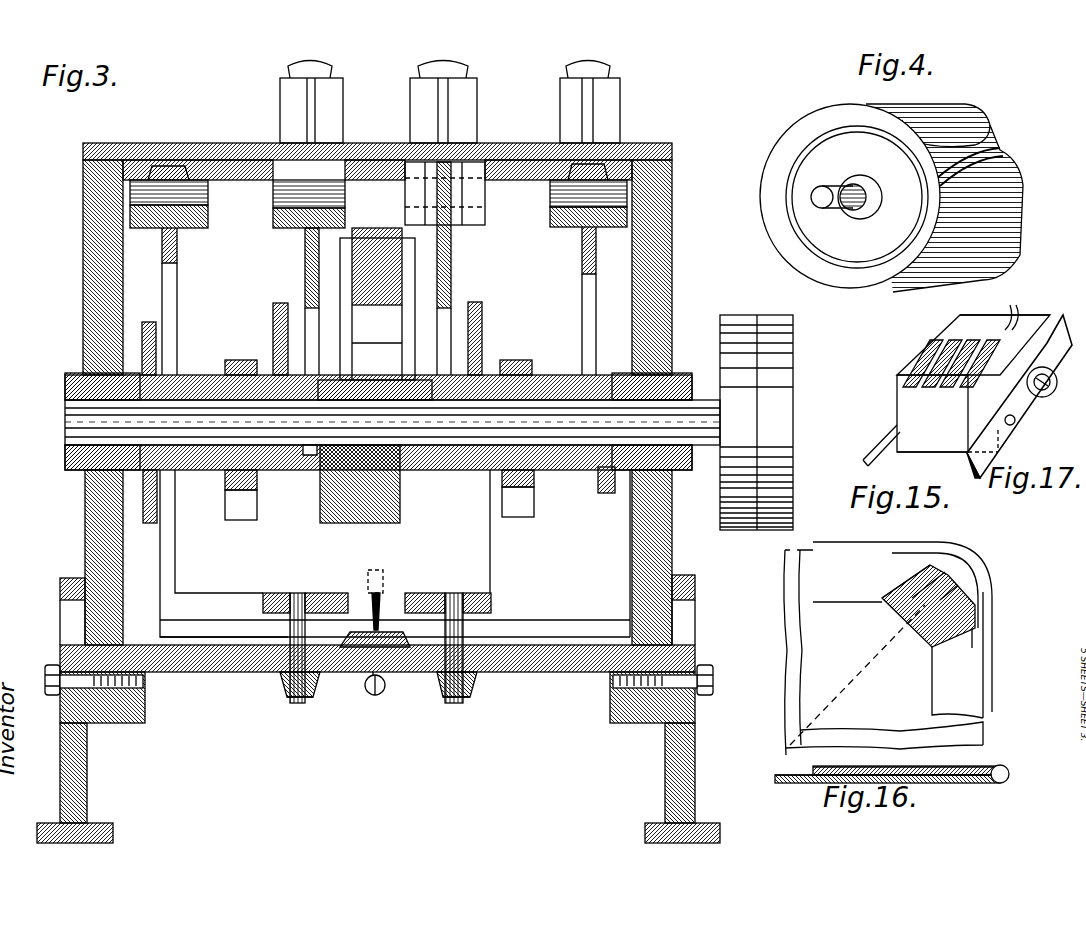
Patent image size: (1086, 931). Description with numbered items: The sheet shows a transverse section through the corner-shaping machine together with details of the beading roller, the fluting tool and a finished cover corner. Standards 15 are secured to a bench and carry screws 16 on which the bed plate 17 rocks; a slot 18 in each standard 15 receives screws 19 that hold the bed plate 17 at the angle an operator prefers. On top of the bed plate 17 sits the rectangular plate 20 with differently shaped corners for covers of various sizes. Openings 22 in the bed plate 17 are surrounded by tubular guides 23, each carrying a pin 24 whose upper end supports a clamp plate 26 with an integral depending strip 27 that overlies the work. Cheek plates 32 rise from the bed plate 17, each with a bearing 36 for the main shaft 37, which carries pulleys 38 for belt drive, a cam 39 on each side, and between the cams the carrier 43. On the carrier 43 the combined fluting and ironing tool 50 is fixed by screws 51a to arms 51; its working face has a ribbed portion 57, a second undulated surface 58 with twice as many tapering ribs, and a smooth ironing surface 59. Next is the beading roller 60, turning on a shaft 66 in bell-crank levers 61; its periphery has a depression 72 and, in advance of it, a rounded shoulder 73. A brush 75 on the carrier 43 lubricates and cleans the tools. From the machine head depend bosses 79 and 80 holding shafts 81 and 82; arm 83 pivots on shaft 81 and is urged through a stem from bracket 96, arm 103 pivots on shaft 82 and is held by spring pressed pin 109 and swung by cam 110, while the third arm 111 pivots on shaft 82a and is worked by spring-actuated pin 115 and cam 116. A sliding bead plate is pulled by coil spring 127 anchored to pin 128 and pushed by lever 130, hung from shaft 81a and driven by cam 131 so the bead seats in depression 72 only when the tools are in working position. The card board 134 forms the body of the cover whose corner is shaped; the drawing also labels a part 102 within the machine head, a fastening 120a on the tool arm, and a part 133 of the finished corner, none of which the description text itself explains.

In FIG. 3, the standards 15 is at (88, 783).
In FIG. 16, the screw 16 is at (958, 578).
In FIG. 3, the bed plate 17 is at (588, 673).
In FIG. 3, the slot 18 is at (62, 608).
In FIG. 3, the screws 19 is at (56, 668).
In FIG. 3, the plate 20 is at (389, 637).
In FIG. 3, the openings 22 is at (294, 690).
In FIG. 3, the tubular guide 23 is at (290, 692).
In FIG. 3, the pin 24 is at (288, 628).
In FIG. 3, the clamp plates 26 is at (278, 592).
In FIG. 3, the integral strip 27 is at (342, 592).
In FIG. 3, the cheek plates 32 is at (85, 556).
In FIG. 3, the bearing 36 is at (65, 478).
In FIG. 3, the main shaft 37 is at (722, 424).
In FIG. 3, the pulleys 38 is at (768, 370).
In FIG. 3, the cam 39 is at (237, 362).
In FIG. 3, the carrier 43 is at (400, 513).
In FIG. 15, the combined fluting and ironing tool 50 is at (912, 438).
In FIG. 15, the arms 51 is at (968, 466).
In FIG. 17, the screws 51a is at (1020, 430).
In FIG. 15, the undulated or ribbed portion 57 is at (958, 392).
In FIG. 15, the second undulated surface 58 is at (1019, 301).
In FIG. 15, the smooth surface 59 is at (975, 325).
In FIG. 3, the combined finishing and beading roller 60 is at (375, 314).
In FIG. 4, the combined finishing and beading roller 60 is at (866, 282).
In FIG. 3, the bell-crank levers 61 is at (406, 357).
In FIG. 4, the shaft 66 is at (812, 200).
In FIG. 4, the depression 72 is at (983, 128).
In FIG. 4, the rounded shoulder 73 is at (1005, 156).
In FIG. 3, the brush 75 is at (382, 598).
In FIG. 3, the boss 79 is at (275, 223).
In FIG. 3, the boss 80 is at (485, 226).
In FIG. 3, the shaft 81 is at (345, 196).
In FIG. 3, the shaft 81a is at (207, 196).
In FIG. 3, the shaft 82 is at (412, 198).
In FIG. 3, the shaft 82a is at (550, 196).
In FIG. 3, the arm 83 is at (305, 260).
In FIG. 3, the bracket 96 is at (410, 108).
In FIG. 3, the stop 102 is at (281, 303).
In FIG. 3, the arm 103 is at (452, 265).
In FIG. 3, the spring pressed pin 109 is at (452, 63).
In FIG. 3, the cam 110 is at (479, 303).
In FIG. 3, the third arm 111 is at (597, 320).
In FIG. 3, the spring-actuated pin 115 is at (600, 67).
In FIG. 3, the cam 116 is at (598, 487).
In FIG. 17, the screw 120a is at (1055, 372).
In FIG. 3, the coil spring 127 is at (375, 698).
In FIG. 3, the pin 128 is at (386, 689).
In FIG. 3, the lever 130 is at (175, 546).
In FIG. 3, the cam 131 is at (158, 331).
In FIG. 16, the lining 133 is at (962, 630).
In FIG. 3, the card board 134 is at (652, 141).
In FIG. 16, the card board 134 is at (822, 673).